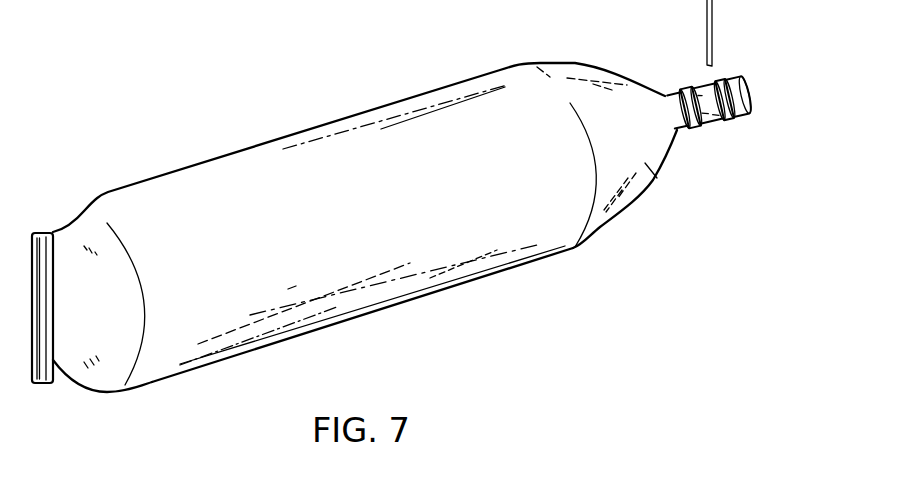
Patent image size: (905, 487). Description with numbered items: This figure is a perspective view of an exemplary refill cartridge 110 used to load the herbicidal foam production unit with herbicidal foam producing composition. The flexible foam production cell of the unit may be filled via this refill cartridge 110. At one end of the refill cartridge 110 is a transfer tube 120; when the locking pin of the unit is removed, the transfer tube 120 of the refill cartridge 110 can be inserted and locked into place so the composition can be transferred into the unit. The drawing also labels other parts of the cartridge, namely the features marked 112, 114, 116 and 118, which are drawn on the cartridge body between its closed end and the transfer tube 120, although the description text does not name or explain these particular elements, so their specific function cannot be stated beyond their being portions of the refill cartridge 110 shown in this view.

The refill cartridge 110 is at (245, 113).
The end cap 112 is at (72, 381).
The cylindrical side wall 114 is at (450, 267).
The shoulder 116 is at (655, 180).
The neck fitting 118 is at (716, 108).
The transfer tube 120 is at (783, 145).